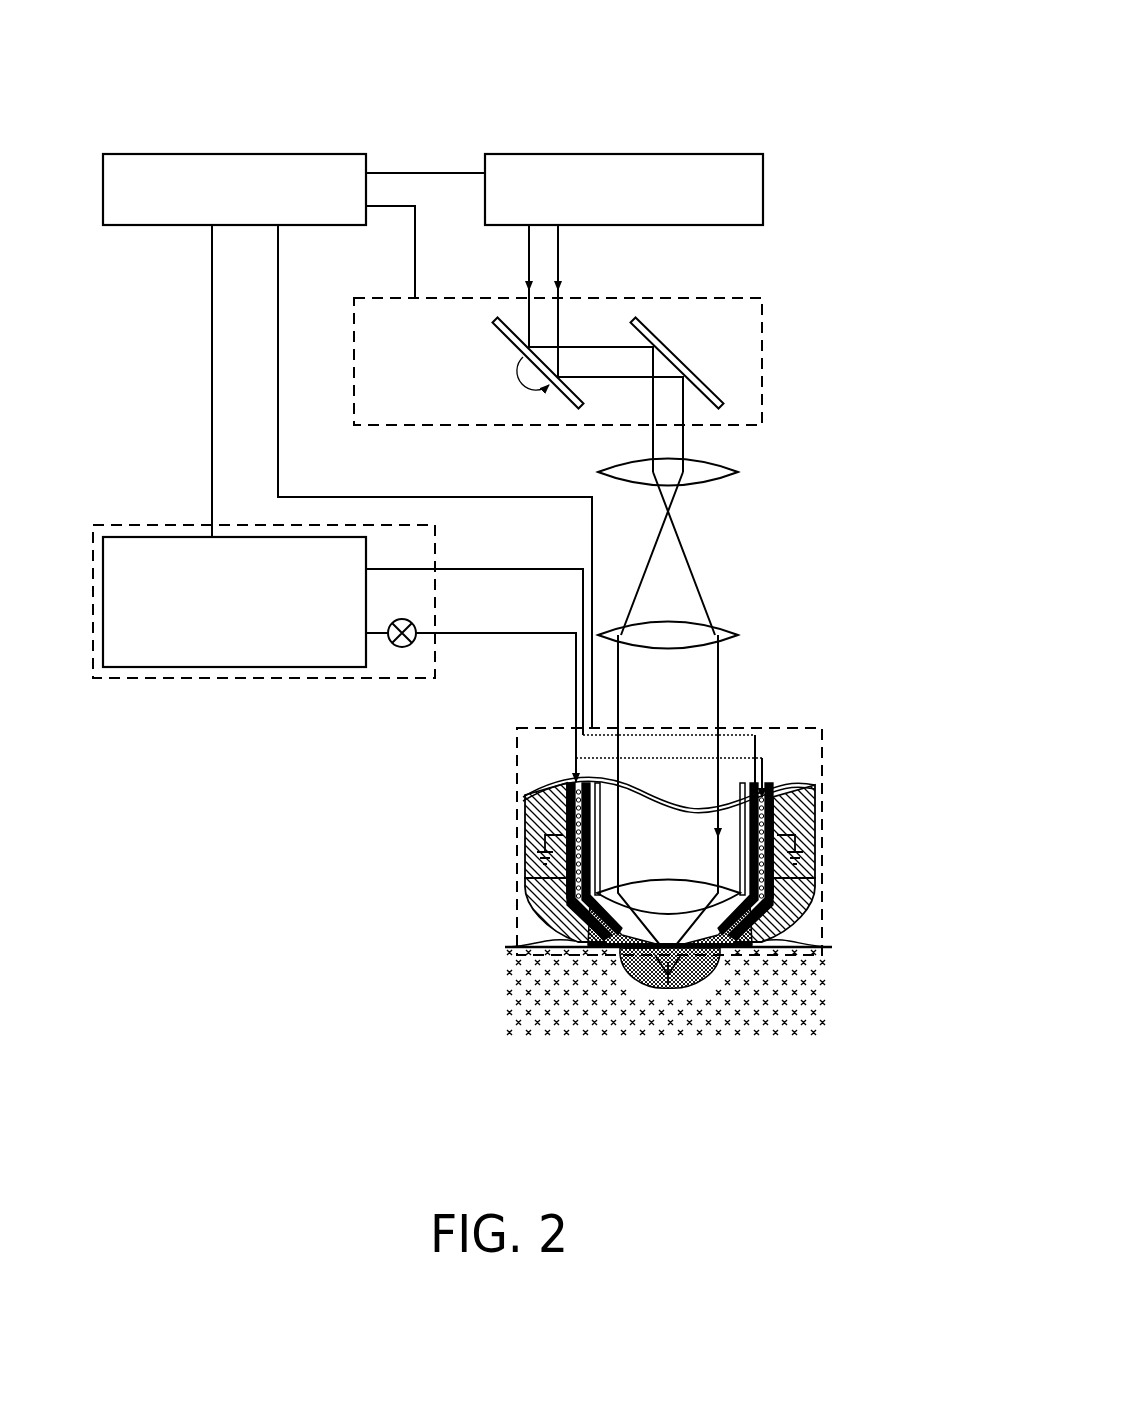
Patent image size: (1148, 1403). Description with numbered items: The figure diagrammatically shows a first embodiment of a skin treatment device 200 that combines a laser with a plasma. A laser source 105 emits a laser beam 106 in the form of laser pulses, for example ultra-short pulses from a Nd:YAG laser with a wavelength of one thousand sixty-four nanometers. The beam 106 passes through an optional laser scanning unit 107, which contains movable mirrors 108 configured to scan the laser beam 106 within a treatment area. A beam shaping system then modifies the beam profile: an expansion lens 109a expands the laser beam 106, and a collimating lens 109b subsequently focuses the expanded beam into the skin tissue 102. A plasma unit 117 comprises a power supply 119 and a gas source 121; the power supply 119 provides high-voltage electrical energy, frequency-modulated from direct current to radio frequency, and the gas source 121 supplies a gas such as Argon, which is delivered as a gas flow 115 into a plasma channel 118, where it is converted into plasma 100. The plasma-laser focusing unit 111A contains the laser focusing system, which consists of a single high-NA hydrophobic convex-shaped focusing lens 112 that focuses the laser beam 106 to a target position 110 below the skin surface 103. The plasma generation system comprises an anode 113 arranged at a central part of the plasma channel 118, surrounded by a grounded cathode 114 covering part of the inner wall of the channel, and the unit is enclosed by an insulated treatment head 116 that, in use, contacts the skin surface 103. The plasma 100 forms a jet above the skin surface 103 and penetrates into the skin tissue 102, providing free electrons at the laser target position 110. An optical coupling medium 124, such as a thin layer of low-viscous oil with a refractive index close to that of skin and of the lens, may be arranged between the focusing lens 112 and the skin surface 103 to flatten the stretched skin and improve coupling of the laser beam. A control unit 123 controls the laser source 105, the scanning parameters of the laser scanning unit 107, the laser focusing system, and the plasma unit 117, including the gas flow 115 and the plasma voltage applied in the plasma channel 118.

The skin treatment device 200 is at (817, 47).
The control unit 123 is at (235, 154).
The laser source 105 is at (626, 154).
The laser beam 106 is at (560, 265).
The laser scanning unit 107 is at (773, 362).
The movable mirror 108 is at (480, 364).
The expansion lens 109a is at (726, 464).
The collimating lens 109b is at (726, 633).
The plasma unit 117 is at (139, 518).
The power supply 119 is at (131, 667).
The gas source 121 is at (187, 667).
The anode 113 is at (485, 569).
The gas flow 115 is at (485, 633).
The plasma-laser focusing unit 111A is at (512, 830).
The insulated treatment head 116 is at (808, 825).
The plasma channel 118 is at (756, 835).
The focusing lens 112 is at (703, 882).
The grounded cathode 114 is at (808, 880).
The skin surface 103 is at (810, 945).
The skin tissue 102 is at (822, 992).
The plasma 100 is at (696, 978).
The target position 110 is at (652, 968).
The optical coupling medium 124 is at (640, 965).